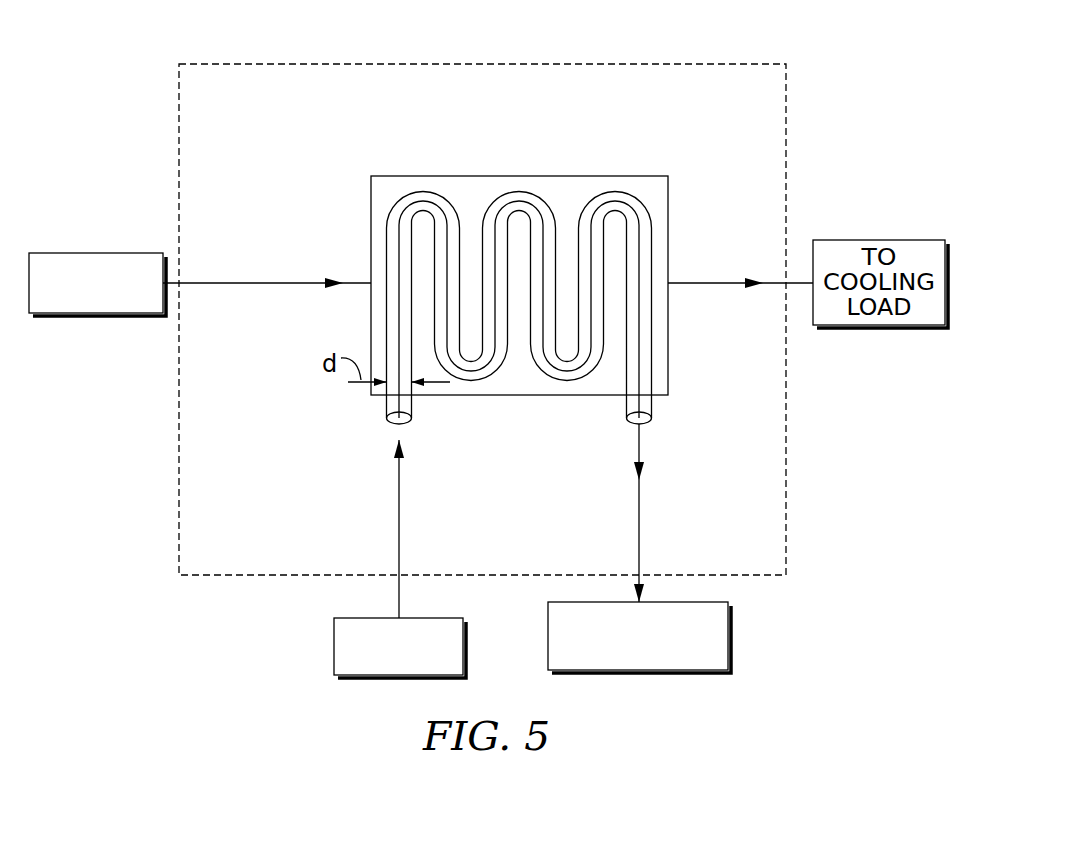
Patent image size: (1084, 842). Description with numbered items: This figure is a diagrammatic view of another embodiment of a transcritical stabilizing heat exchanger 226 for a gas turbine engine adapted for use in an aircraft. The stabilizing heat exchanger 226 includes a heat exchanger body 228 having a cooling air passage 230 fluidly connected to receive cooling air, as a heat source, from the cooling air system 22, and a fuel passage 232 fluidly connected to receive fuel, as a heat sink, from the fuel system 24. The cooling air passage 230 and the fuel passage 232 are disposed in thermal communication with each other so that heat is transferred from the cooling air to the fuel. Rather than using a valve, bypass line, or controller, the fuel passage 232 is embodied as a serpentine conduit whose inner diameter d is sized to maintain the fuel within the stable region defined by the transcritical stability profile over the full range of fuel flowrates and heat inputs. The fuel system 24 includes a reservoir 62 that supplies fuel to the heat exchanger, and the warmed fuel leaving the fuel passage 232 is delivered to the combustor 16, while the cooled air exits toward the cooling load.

The transcritical stabilizing heat exchanger 226 is at (773, 51).
The cooling air system 22 is at (65, 238).
The heat exchanger body 228 is at (423, 175).
The cooling air passage 230 is at (470, 195).
The fuel passage 232 is at (523, 197).
The fuel system 24 is at (310, 623).
The reservoir 62 is at (447, 618).
The combustor 16 is at (728, 632).